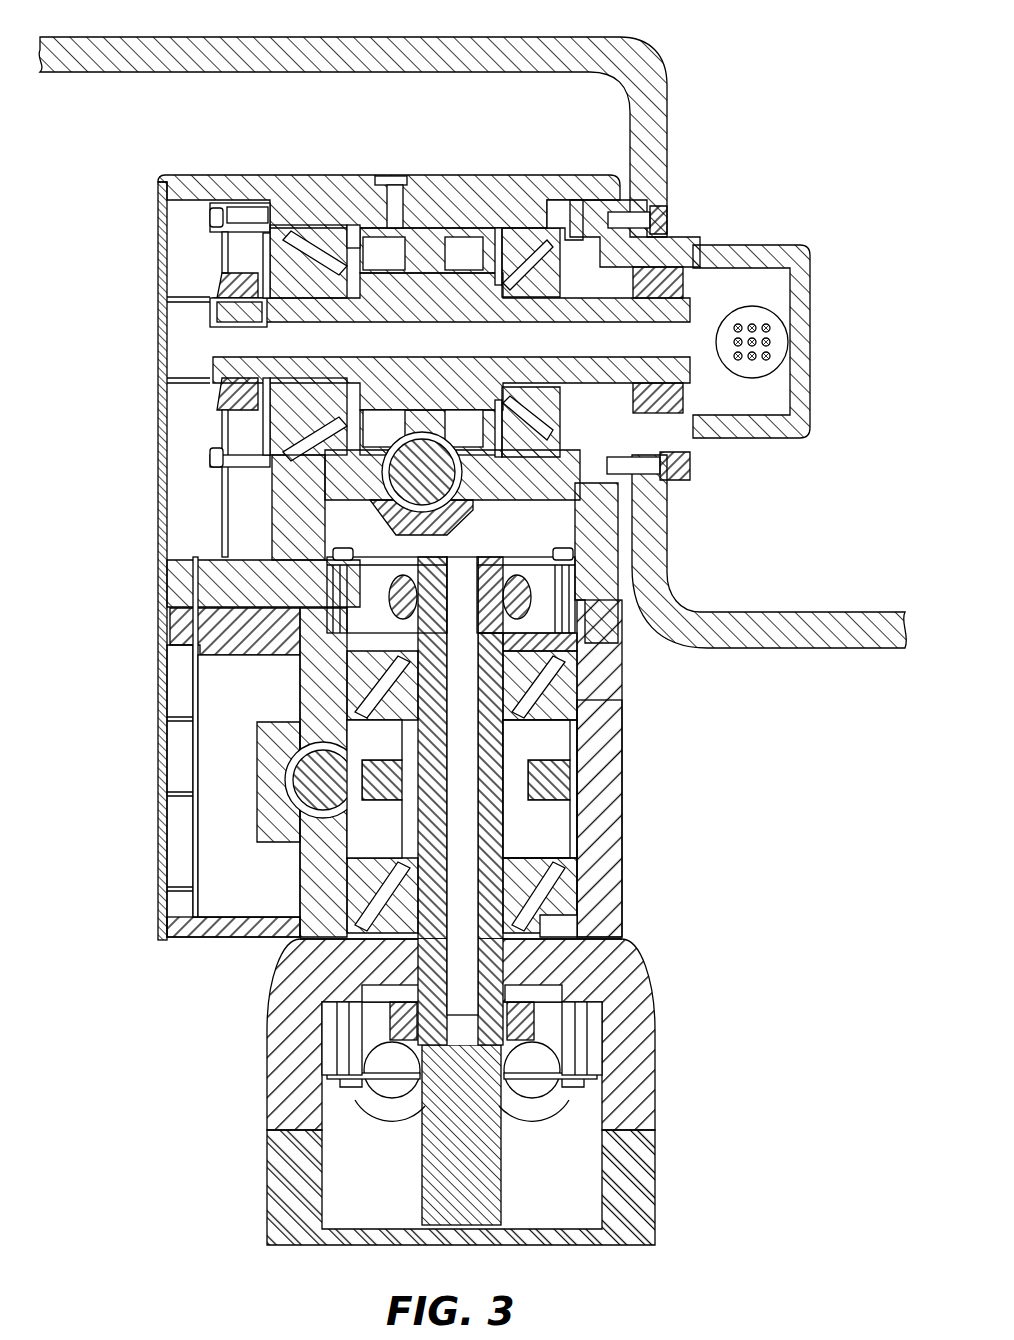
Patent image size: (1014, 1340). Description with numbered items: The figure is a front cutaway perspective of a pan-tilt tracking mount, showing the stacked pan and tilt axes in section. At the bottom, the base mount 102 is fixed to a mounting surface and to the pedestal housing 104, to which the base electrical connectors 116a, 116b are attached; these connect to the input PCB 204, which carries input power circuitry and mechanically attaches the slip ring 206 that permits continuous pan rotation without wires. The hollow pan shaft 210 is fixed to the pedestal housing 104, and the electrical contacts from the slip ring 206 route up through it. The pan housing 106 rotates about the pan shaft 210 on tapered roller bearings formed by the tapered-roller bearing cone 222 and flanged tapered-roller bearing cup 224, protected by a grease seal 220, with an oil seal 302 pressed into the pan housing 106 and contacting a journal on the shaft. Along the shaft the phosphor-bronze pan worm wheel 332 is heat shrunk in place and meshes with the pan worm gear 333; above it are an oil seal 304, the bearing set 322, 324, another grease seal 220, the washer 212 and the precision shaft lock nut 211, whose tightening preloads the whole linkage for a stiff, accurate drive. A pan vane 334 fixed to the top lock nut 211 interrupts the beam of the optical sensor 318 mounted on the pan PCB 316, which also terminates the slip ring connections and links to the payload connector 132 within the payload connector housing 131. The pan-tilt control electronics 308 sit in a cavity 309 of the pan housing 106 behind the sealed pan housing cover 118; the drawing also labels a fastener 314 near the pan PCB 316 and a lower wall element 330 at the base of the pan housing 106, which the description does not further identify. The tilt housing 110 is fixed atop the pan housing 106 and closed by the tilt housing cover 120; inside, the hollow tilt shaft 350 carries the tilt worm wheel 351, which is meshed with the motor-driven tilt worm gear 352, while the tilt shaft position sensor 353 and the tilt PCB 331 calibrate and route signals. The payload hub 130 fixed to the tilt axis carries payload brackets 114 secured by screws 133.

The base mount 102 is at (655, 1182).
The pedestal housing 104 is at (652, 1078).
The pan housing 106 is at (622, 750).
The tilt housing 110 is at (236, 175).
The payload bracket 114 is at (563, 37).
The base electrical connector 116a is at (355, 1110).
The base electrical connector 116b is at (570, 1110).
The pan housing cover 118 is at (158, 858).
The tilt housing cover 120 is at (158, 330).
The payload hub 130 is at (690, 237).
The payload connector housing 131 is at (800, 245).
The payload connector 132 is at (780, 340).
The screw 133 is at (664, 215).
The input PCB 204 is at (292, 1058).
The slip ring 206 is at (500, 1160).
The pan shaft 210 is at (605, 970).
The precision shaft lock nut 211 is at (590, 555).
The washer 212 is at (590, 580).
The grease seal 220 is at (625, 605).
The tapered-roller bearing cone 222 is at (610, 903).
The tapered-roller bearing cup 224 is at (600, 872).
The oil seal 302 is at (585, 832).
The oil seal 304 is at (622, 715).
The pan-tilt control electronics 308 is at (158, 900).
The cavity 309 is at (210, 748).
The fastener 314 is at (660, 465).
The pan PCB 316 is at (632, 492).
The optical sensor 318 is at (340, 590).
The bearing 322 is at (640, 620).
The bearing 324 is at (625, 690).
The bottom wall 330 is at (158, 930).
The tilt PCB 331 is at (215, 250).
The pan worm wheel 332 is at (585, 786).
The pan worm gear 333 is at (320, 782).
The pan vane 334 is at (335, 640).
The tilt shaft 350 is at (545, 230).
The tilt worm wheel 351 is at (391, 176).
The tilt worm gear 352 is at (395, 480).
The tilt shaft position sensor 353 is at (222, 455).